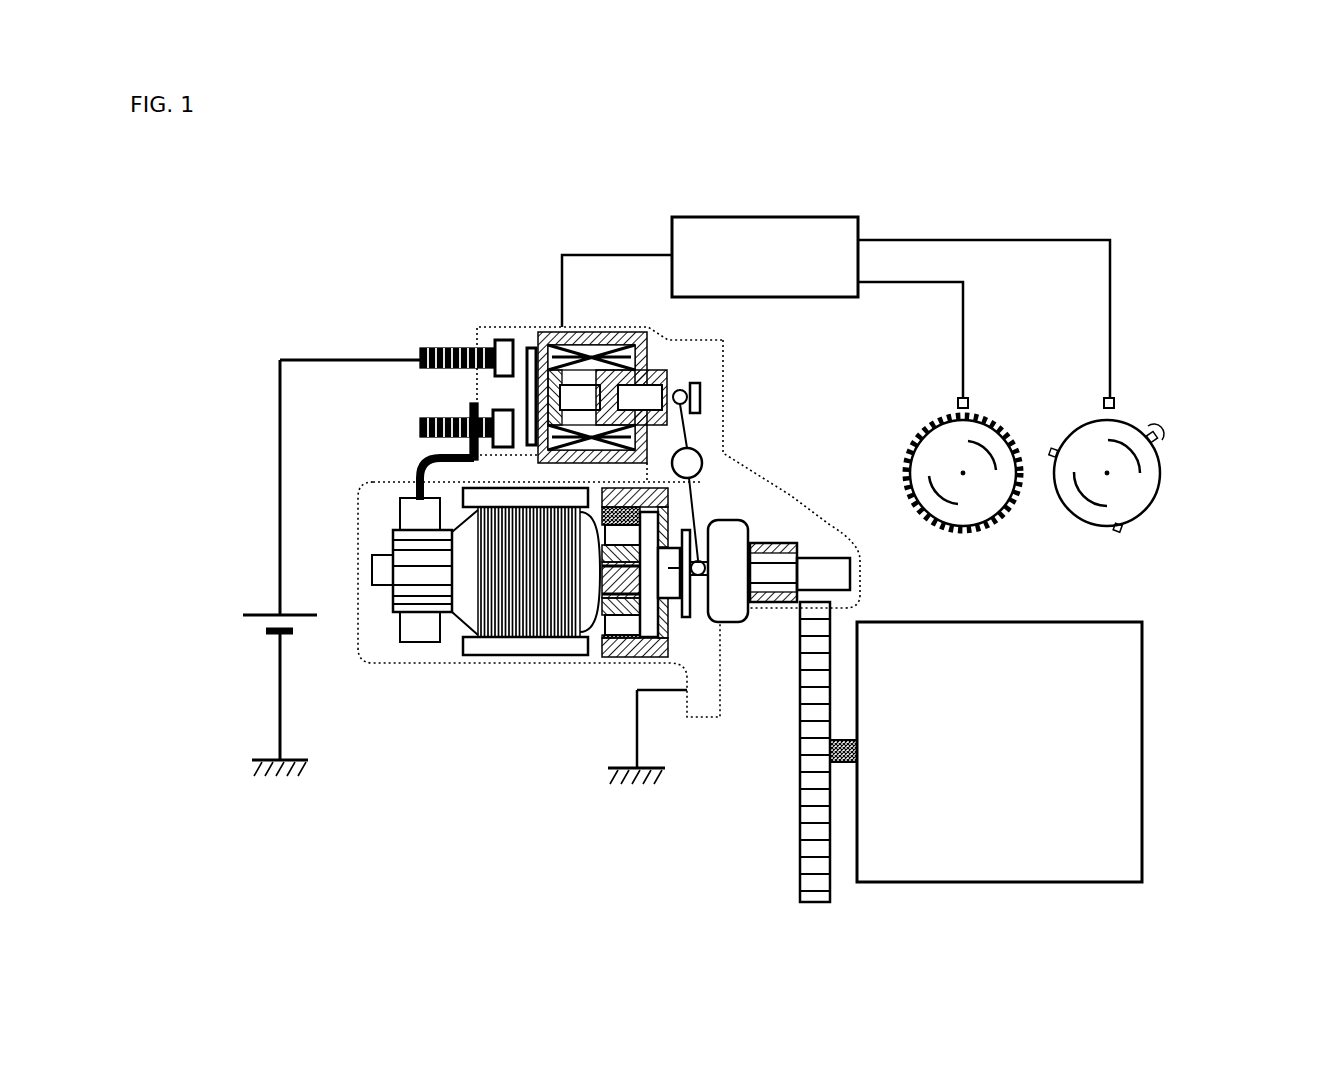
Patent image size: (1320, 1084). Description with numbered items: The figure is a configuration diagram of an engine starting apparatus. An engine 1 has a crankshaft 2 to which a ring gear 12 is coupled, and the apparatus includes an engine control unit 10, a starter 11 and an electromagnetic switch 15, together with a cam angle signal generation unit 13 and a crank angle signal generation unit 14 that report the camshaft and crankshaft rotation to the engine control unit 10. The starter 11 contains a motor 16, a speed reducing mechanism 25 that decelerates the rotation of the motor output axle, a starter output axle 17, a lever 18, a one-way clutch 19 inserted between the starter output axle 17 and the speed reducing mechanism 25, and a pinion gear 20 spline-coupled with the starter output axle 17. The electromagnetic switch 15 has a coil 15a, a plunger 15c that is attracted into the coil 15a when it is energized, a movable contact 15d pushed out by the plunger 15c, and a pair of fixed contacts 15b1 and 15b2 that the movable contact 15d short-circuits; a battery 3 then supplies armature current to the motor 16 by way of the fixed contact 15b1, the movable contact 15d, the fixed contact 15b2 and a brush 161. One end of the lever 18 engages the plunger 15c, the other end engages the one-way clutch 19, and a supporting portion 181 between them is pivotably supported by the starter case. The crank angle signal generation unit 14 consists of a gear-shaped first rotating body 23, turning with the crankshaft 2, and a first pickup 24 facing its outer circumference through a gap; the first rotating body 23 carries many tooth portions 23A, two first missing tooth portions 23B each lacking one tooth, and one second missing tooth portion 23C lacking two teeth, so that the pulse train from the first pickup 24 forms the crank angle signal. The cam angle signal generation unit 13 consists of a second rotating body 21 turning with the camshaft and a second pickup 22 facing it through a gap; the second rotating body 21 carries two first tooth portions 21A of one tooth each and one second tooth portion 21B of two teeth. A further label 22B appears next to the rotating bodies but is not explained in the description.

The engine 1 is at (1037, 648).
The crankshaft 2 is at (842, 748).
The battery 3 is at (259, 608).
The engine control unit (ECU) 10 is at (692, 230).
The starter 11 is at (792, 495).
The ring gear 12 is at (802, 708).
The cam angle signal generation unit 13 is at (1170, 471).
The crank angle signal generation unit 14 is at (935, 425).
The electromagnetic switch 15 is at (480, 327).
The coil 15a is at (590, 335).
The fixed contact 15b1 is at (510, 340).
The fixed contact 15b2 is at (500, 415).
The plunger 15c is at (665, 368).
The movable contact 15d is at (533, 345).
The motor 16 is at (495, 645).
The starter output axle 17 is at (830, 576).
The lever 18 is at (714, 455).
The one-way clutch 19 is at (726, 545).
The pinion gear 20 is at (782, 558).
The second rotating body 21 is at (1138, 497).
The first tooth portion 21A is at (1055, 449).
The second tooth portion 21B is at (1157, 436).
The second pickup 22 is at (1112, 400).
The tooth 22B is at (1018, 445).
The first rotating body 23 is at (985, 432).
The tooth portion 23A is at (916, 465).
The first missing tooth portion 23B is at (922, 430).
The second missing tooth portion 23C is at (952, 532).
The first pickup 24 is at (963, 398).
The speed reducing mechanism 25 is at (622, 655).
The brush 161 is at (410, 520).
The supporting portion 181 is at (716, 404).